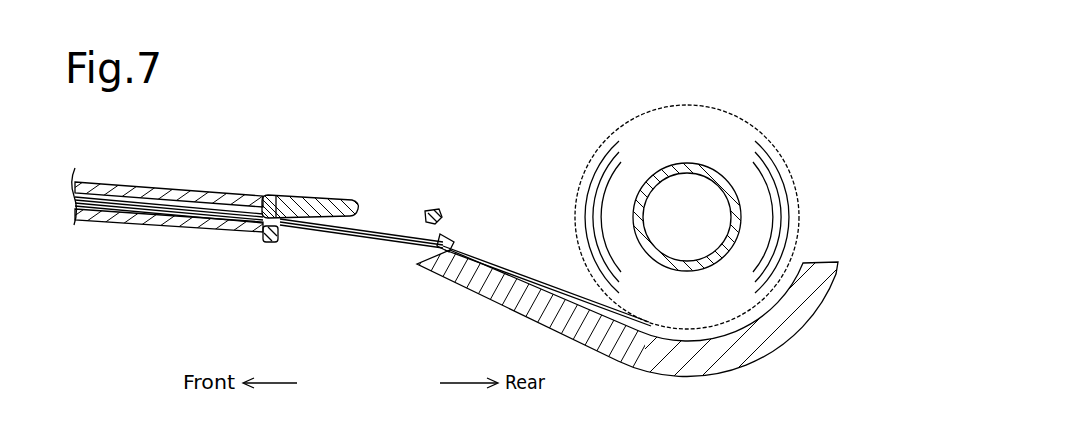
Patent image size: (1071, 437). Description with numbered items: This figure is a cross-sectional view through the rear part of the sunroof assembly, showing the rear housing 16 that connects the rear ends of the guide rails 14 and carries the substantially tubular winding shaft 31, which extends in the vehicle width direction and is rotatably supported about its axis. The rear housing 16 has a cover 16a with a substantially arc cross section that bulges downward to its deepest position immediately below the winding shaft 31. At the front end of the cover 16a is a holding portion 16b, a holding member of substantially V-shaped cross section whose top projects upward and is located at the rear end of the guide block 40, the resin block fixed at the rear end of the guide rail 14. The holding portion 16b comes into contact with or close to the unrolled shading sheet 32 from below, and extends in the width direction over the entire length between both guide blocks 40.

The guide rail 14 is at (166, 182).
The guide block 40 is at (318, 189).
The shading sheet 32 is at (395, 232).
The winding shaft 31 is at (703, 163).
The rear housing 16 is at (822, 298).
The cover 16a is at (682, 379).
The holding portion 16b is at (447, 258).